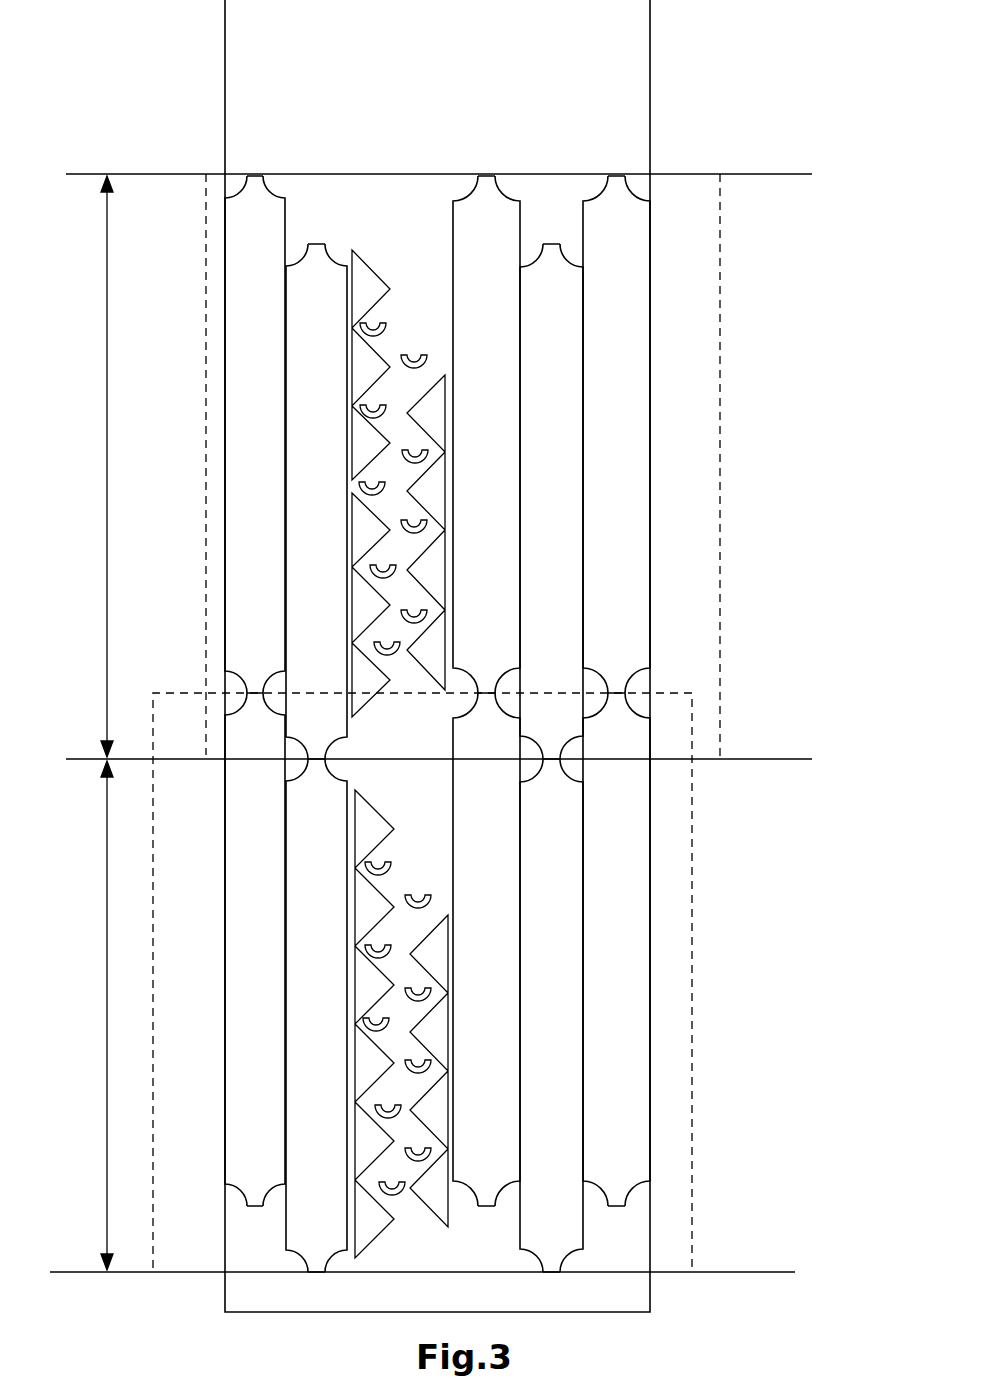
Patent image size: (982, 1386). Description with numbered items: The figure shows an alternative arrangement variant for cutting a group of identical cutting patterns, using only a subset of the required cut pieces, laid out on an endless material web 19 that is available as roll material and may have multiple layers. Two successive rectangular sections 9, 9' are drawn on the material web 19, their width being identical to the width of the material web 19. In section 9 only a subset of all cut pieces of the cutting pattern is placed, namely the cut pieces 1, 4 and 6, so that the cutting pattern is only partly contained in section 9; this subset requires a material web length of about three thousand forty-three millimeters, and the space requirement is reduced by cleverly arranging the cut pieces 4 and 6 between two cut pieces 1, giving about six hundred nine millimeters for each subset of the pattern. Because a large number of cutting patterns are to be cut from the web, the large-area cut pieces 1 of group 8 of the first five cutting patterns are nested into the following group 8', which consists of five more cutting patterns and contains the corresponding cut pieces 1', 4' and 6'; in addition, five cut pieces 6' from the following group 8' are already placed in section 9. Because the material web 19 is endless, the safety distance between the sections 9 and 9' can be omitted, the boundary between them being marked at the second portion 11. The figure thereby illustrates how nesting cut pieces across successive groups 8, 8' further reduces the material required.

The cut piece 1 is at (690, 949).
The cut piece 1' is at (688, 434).
The cut piece 4 is at (590, 1024).
The cut piece 4' is at (556, 483).
The cut piece 6 is at (589, 1028).
The cut piece 6' is at (584, 489).
The group of identical cut pieces 8 is at (466, 980).
The group of identical cut pieces 8' is at (509, 466).
The repeating section 9 is at (91, 1015).
The repeating section 9' is at (88, 466).
The second portion of the cut piece 11 is at (451, 629).
The material web 19 is at (647, 82).